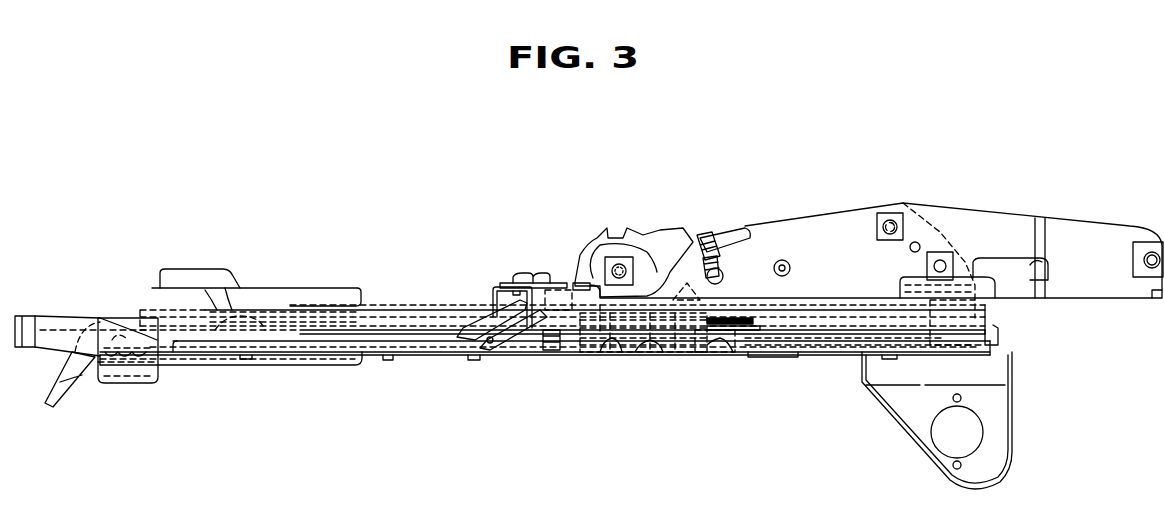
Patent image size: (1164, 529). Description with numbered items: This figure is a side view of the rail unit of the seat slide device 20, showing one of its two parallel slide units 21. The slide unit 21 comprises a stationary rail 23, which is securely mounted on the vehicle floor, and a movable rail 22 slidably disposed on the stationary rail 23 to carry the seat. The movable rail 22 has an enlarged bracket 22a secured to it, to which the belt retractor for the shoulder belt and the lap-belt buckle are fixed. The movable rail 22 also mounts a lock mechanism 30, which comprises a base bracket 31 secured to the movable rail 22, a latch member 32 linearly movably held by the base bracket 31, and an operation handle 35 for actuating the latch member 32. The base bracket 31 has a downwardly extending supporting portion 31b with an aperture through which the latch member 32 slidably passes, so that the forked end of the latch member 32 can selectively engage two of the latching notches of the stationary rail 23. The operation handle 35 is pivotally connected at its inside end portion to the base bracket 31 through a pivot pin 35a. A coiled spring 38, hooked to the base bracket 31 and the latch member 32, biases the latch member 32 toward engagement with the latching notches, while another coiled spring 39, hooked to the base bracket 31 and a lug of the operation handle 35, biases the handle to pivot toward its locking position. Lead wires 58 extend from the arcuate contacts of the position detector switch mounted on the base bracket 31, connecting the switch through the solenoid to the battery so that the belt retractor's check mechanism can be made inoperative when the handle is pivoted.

The seat slide device 20 is at (495, 282).
The slide unit 21 is at (416, 308).
The movable rail 22 is at (256, 295).
The enlarged bracket 22a is at (940, 232).
The stationary rail 23 is at (125, 313).
The lock mechanism 30 is at (663, 368).
The base bracket 31 is at (820, 300).
The supporting portion 31b is at (702, 345).
The latch member 32 is at (622, 338).
The operation handle 35 is at (478, 322).
The pivot pin 35a is at (53, 330).
The coiled spring 38 is at (720, 328).
The coiled spring 39 is at (553, 345).
The lead wire 58 is at (574, 283).